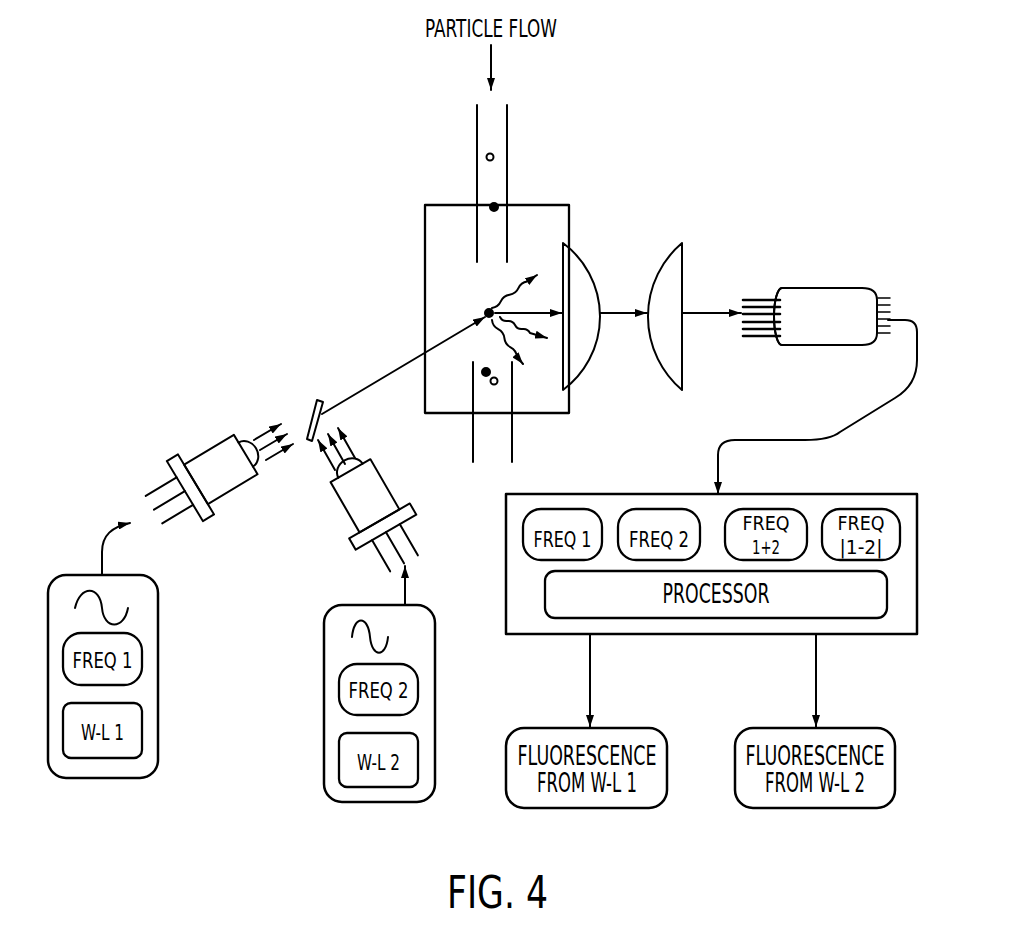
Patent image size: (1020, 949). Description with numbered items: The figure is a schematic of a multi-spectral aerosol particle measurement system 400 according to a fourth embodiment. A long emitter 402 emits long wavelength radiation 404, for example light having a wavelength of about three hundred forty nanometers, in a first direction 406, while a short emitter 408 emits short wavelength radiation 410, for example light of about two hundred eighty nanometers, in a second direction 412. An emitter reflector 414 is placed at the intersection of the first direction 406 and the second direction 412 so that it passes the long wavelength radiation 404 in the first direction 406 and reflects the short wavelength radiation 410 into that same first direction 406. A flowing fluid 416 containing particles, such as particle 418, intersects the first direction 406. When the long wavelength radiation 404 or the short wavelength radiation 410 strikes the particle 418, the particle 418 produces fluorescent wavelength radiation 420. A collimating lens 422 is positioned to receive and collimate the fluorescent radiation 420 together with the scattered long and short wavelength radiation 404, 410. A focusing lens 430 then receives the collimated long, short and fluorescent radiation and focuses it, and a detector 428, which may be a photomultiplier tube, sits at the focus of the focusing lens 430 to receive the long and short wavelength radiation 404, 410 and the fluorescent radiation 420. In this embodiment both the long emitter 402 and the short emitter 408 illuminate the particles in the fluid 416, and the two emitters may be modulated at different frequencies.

The multi-spectral aerosol particle measurement system 400 is at (360, 153).
The long emitter 402 is at (203, 462).
The long wavelength radiation 404 is at (257, 433).
The first direction 406 is at (272, 427).
The short emitter 408 is at (360, 510).
The short wavelength radiation 410 is at (327, 450).
The second direction 412 is at (320, 443).
The emitter reflector 414 is at (317, 399).
The flowing fluid 416 is at (493, 106).
The particle 418 is at (486, 312).
The fluorescent wavelength radiation 420 is at (398, 368).
The collimating lens 422 is at (567, 246).
The detector 428 is at (825, 298).
The focusing lens 430 is at (682, 242).